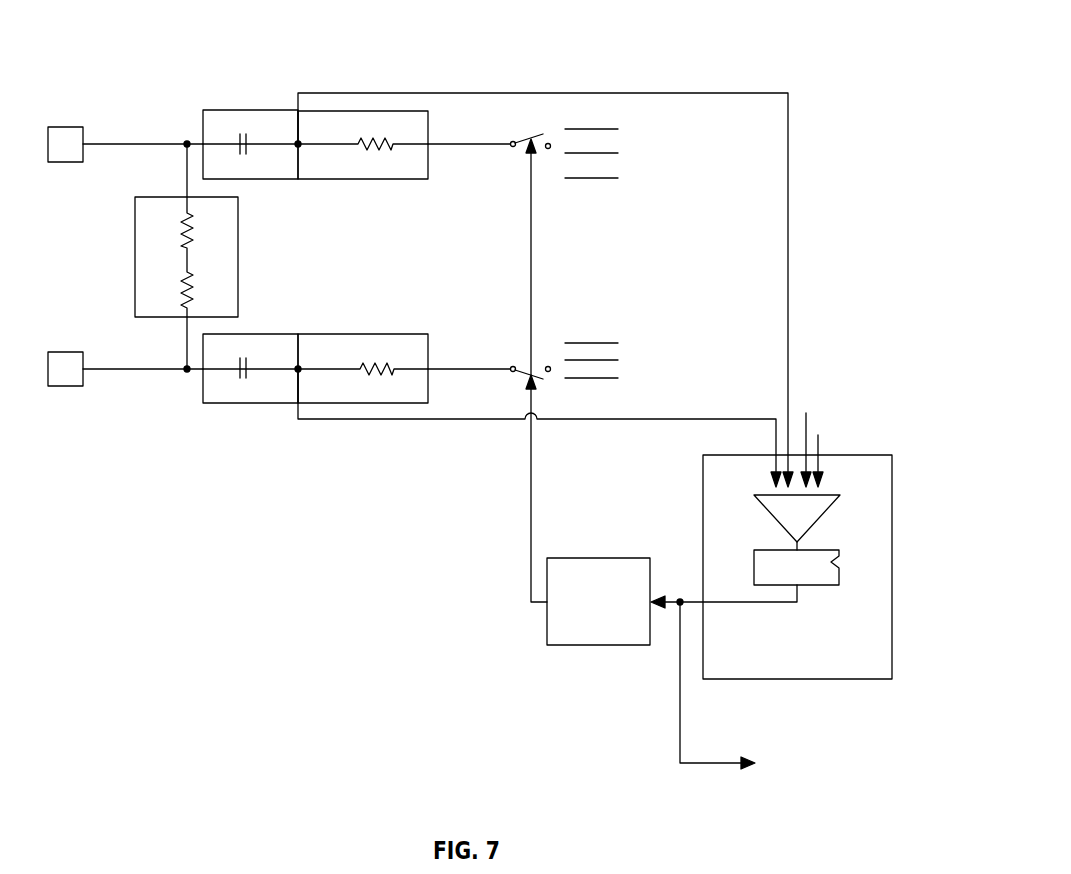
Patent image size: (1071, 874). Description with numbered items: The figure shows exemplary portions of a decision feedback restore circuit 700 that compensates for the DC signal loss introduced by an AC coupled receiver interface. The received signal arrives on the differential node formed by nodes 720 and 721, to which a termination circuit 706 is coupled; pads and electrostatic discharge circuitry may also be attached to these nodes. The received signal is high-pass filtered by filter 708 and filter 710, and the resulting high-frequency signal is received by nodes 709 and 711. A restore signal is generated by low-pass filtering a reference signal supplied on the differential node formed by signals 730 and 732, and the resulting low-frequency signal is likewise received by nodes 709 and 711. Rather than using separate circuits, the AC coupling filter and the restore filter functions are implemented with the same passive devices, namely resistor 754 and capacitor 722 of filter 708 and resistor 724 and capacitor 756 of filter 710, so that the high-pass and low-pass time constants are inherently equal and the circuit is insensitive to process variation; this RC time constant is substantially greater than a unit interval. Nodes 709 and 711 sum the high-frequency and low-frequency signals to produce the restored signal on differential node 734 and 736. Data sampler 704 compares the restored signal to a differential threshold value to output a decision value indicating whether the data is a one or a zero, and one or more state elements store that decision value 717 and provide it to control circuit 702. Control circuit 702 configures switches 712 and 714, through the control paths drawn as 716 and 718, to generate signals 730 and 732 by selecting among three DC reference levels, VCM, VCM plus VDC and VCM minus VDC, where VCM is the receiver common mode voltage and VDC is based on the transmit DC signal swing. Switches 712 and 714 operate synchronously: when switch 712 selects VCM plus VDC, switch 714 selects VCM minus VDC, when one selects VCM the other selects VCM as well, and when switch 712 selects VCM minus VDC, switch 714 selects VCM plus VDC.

The decision feedback restore circuit 700 is at (152, 42).
The control circuit 702 is at (615, 629).
The data sampler 704 is at (812, 669).
The termination circuit 706 is at (227, 262).
The filter 708 is at (243, 174).
The node 709 is at (298, 148).
The filter 710 is at (241, 362).
The node 711 is at (298, 367).
The switch 712 is at (525, 142).
The switch 714 is at (523, 375).
The switch control line 716 is at (531, 253).
The decision value 717 is at (681, 600).
The control output line 718 is at (531, 495).
The node 720 is at (148, 143).
The node 721 is at (148, 367).
The capacitor 722 is at (243, 133).
The resistor 724 is at (243, 379).
The signal 730 is at (458, 148).
The signal 732 is at (459, 366).
The differential node 734 is at (534, 93).
The differential node 736 is at (587, 420).
The resistor 754 is at (387, 141).
The capacitor 756 is at (384, 366).